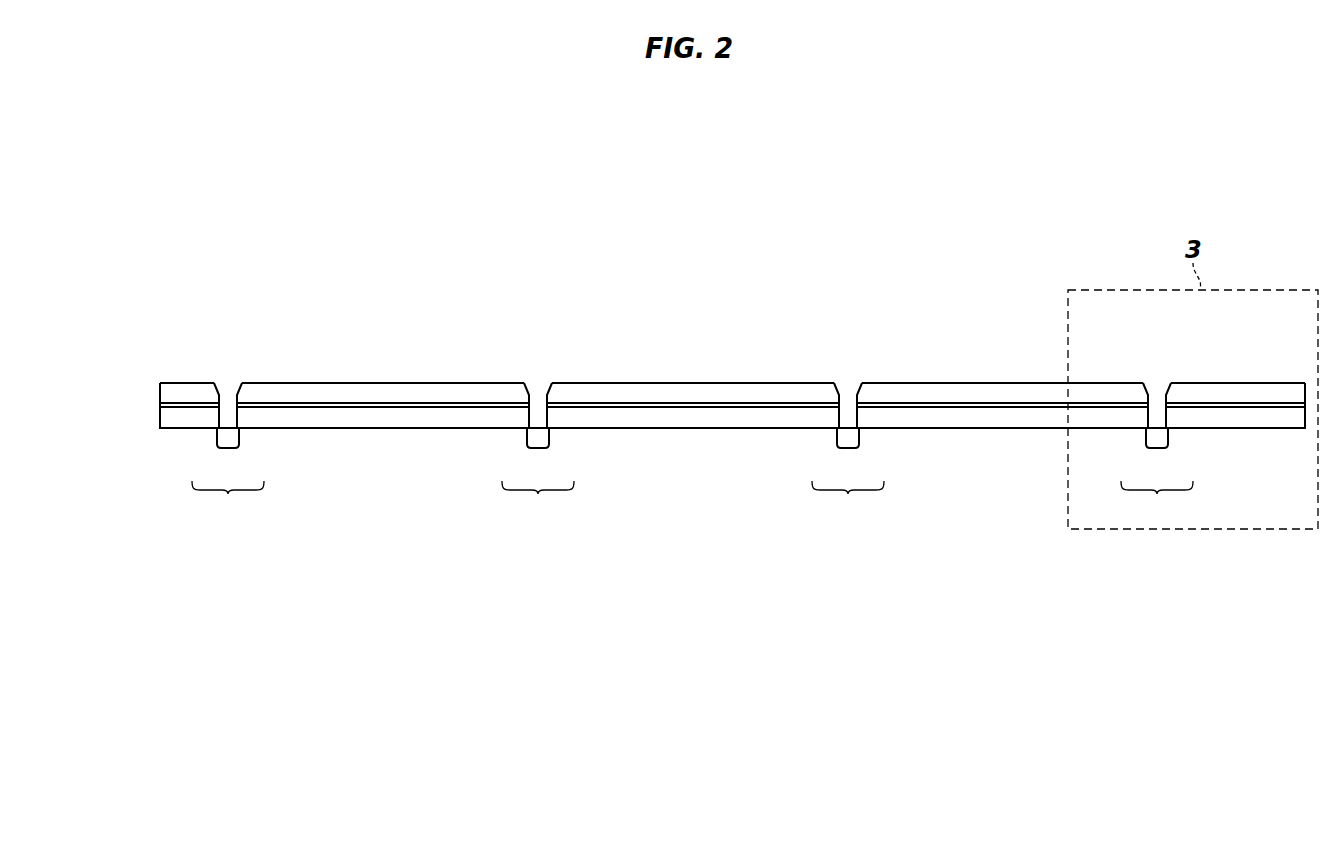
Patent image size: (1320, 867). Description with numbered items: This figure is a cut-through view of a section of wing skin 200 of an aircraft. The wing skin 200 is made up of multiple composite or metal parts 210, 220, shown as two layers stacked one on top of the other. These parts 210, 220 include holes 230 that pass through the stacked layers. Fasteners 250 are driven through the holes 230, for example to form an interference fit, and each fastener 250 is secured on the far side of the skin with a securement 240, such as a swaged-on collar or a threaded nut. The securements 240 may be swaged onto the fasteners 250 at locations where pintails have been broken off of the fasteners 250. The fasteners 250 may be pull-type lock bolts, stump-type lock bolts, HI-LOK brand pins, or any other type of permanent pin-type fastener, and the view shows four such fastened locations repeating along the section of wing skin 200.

The wing skin 200 is at (917, 184).
The composite or metal part 210 is at (168, 392).
The composite or metal part 220 is at (168, 418).
The hole 230 is at (692, 503).
The securement 240 is at (217, 438).
The fastener 250 is at (234, 382).